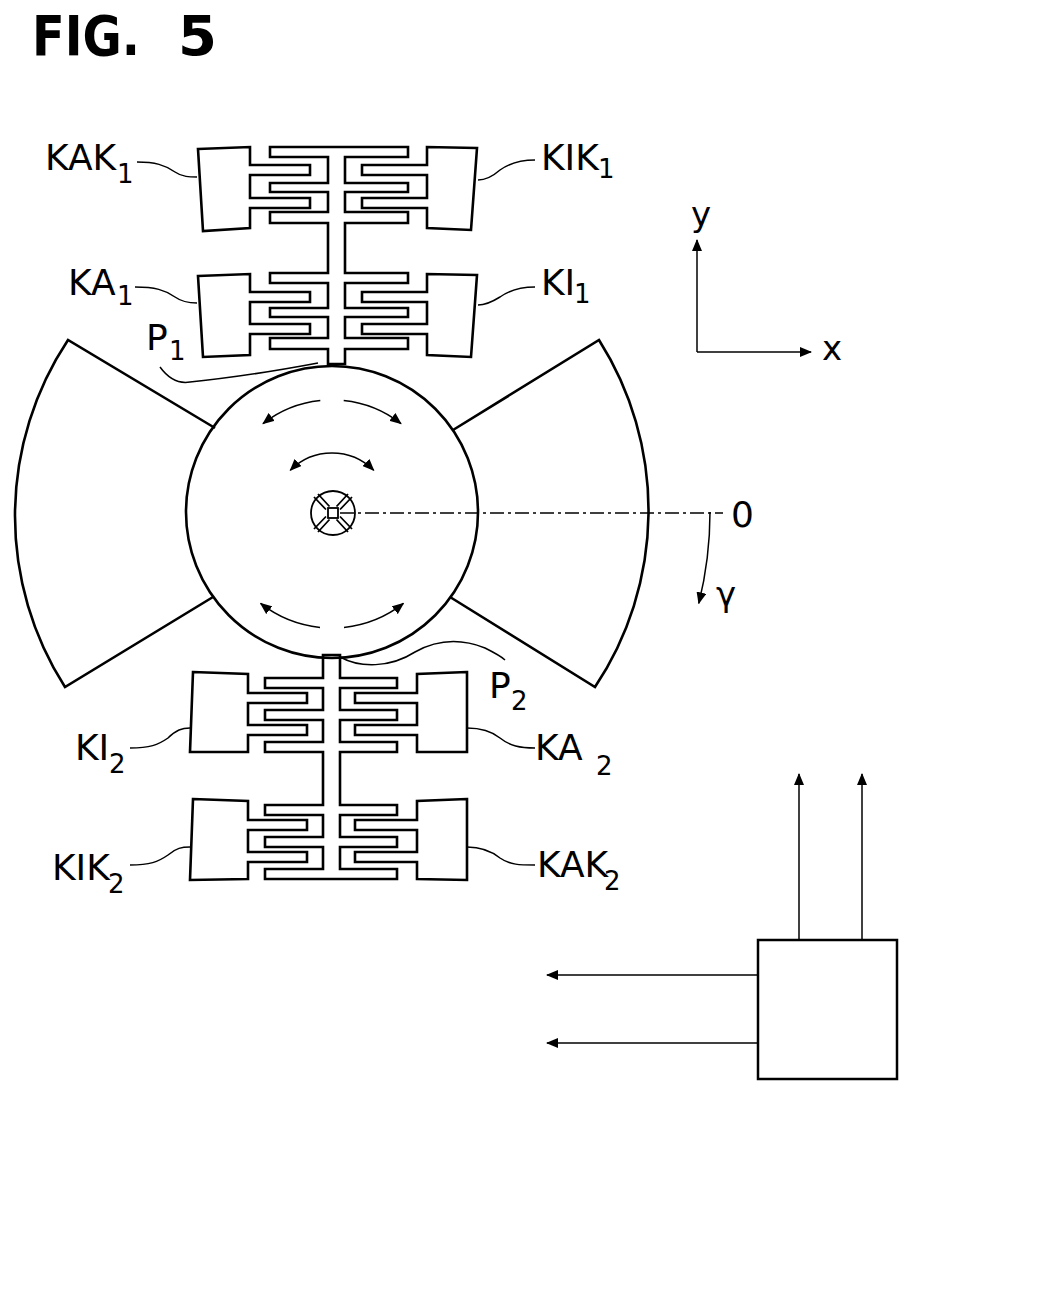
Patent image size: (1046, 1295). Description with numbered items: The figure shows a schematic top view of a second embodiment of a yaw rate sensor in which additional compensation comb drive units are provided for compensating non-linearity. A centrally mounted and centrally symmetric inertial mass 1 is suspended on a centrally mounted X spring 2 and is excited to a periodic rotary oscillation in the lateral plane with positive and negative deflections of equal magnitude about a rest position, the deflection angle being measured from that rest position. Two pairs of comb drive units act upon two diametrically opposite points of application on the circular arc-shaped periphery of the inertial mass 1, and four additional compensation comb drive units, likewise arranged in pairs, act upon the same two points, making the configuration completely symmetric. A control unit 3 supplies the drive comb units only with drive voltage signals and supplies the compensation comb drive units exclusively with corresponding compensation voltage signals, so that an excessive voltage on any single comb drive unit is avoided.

The inertial mass 1 is at (427, 413).
The X spring 2 is at (333, 535).
The control unit 3 is at (828, 1080).